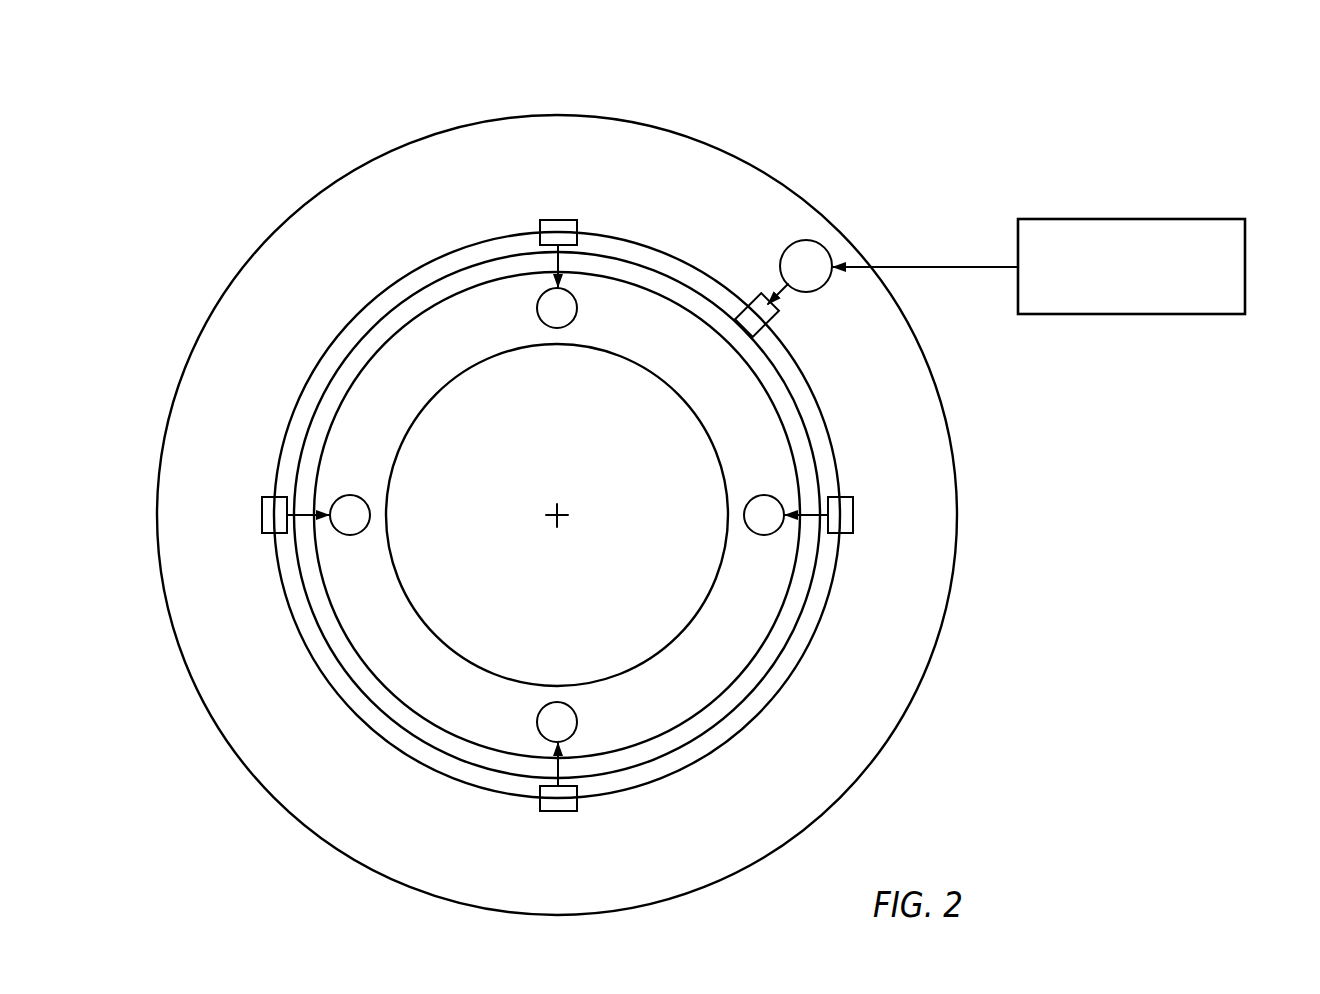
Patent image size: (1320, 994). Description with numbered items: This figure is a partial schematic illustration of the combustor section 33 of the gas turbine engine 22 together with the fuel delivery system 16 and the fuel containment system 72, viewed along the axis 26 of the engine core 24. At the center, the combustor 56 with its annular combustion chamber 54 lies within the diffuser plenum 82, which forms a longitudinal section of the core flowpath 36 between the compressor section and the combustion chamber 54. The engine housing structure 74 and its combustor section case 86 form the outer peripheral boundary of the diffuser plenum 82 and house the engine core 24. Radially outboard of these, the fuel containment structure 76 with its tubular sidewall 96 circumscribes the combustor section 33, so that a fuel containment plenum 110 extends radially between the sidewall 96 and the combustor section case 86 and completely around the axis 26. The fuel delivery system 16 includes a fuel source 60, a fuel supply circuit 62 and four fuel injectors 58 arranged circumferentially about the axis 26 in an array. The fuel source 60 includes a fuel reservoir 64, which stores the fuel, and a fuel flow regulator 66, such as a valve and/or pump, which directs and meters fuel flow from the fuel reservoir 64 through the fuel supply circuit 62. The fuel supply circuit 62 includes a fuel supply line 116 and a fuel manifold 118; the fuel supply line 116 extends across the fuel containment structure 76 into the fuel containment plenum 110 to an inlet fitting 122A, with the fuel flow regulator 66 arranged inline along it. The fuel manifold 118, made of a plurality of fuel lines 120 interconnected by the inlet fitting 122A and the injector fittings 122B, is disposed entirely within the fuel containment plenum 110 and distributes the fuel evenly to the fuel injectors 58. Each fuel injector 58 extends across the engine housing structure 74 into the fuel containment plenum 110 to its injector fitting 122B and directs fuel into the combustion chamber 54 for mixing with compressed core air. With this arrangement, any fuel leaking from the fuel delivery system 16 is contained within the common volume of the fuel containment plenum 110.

The fuel delivery system 16 is at (1020, 185).
The gas turbine engine 22 is at (588, 471).
The engine core 24 is at (588, 471).
The axis 26 is at (560, 520).
The combustor section 33 is at (725, 268).
The core flowpath 36 is at (579, 515).
The combustion chamber 54 is at (772, 449).
The combustor 56 is at (674, 338).
The fuel injectors 58 is at (557, 330).
The fuel source 60 is at (1110, 212).
The fuel supply circuit 62 is at (953, 250).
The fuel reservoir 64 is at (1145, 298).
The fuel flow regulator 66 is at (813, 243).
The fuel containment system 72 is at (777, 160).
The engine housing structure 74 is at (641, 262).
The fuel containment structure 76 is at (652, 117).
The diffuser plenum 82 is at (352, 652).
The combustor section case 86 is at (598, 252).
The sidewall 96 is at (558, 115).
The fuel containment plenum 110 is at (477, 192).
The fuel supply line 116 is at (790, 297).
The fuel manifold 118 is at (844, 435).
The fuel lines 120 is at (335, 340).
The inlet fitting 122A is at (783, 328).
The injector fittings 122B is at (558, 220).